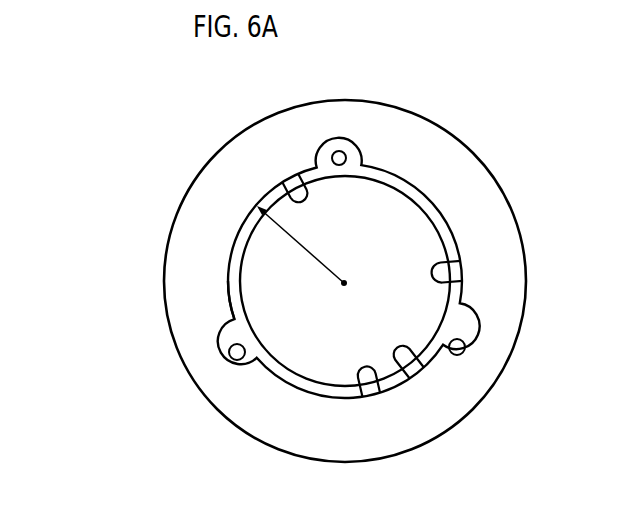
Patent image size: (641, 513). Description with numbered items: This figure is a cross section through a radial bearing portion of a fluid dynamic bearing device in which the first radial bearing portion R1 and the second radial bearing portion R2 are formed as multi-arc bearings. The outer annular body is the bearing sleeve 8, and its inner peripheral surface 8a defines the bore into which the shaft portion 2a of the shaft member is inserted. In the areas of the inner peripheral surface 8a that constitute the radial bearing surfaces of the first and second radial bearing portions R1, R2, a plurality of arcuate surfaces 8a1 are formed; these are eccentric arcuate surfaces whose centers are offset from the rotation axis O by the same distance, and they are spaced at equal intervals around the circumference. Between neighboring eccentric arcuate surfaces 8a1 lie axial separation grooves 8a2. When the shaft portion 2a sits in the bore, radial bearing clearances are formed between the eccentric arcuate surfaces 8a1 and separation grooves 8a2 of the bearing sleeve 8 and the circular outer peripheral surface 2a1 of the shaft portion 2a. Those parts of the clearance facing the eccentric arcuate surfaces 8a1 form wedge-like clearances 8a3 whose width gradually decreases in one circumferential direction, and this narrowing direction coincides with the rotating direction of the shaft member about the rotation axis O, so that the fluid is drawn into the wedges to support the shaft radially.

The first radial bearing portion R1 is at (183, 187).
The second radial bearing portion R2 is at (345, 265).
The bearing sleeve 8 is at (420, 132).
The inner peripheral surface 8a is at (422, 362).
The arcuate surfaces 8a1 is at (298, 174).
The axial separation grooves 8a2 is at (340, 152).
The wedge-like clearances 8a3 is at (230, 247).
The shaft portion 2a is at (422, 250).
The inner circumferential surface of bore 2a1 is at (283, 378).
The rotation axis O is at (343, 285).